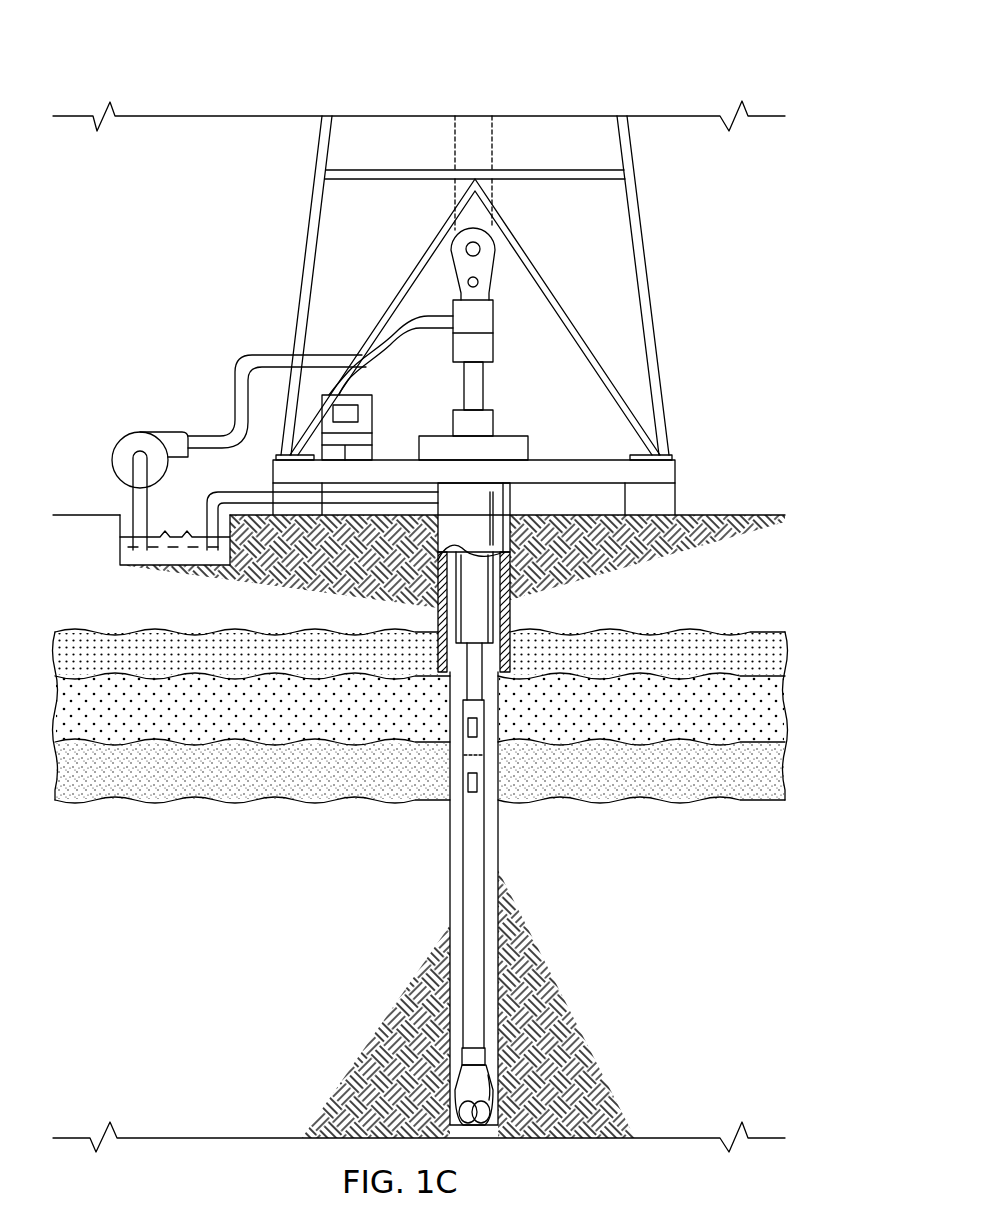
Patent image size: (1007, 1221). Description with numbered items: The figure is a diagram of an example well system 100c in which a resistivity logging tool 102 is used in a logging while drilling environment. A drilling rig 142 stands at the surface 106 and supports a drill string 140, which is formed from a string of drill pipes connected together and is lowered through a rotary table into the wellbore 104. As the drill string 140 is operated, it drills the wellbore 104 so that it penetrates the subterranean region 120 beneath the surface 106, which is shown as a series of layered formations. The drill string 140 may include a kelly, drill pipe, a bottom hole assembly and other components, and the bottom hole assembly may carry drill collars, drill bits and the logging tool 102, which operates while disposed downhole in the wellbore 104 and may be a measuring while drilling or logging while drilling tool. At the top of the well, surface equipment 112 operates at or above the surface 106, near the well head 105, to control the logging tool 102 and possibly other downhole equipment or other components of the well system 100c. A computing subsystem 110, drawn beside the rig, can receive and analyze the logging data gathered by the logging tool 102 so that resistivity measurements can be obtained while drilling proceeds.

The well system 100c is at (180, 86).
The drilling rig 142 is at (228, 246).
The surface equipment 112 is at (732, 314).
The computing subsystem 110 is at (354, 395).
The well head 105 is at (518, 436).
The surface 106 is at (717, 515).
The subterranean region 120 is at (676, 617).
The drill string 140 is at (466, 684).
The wellbore 104 is at (450, 823).
The logging tool 102 is at (464, 868).